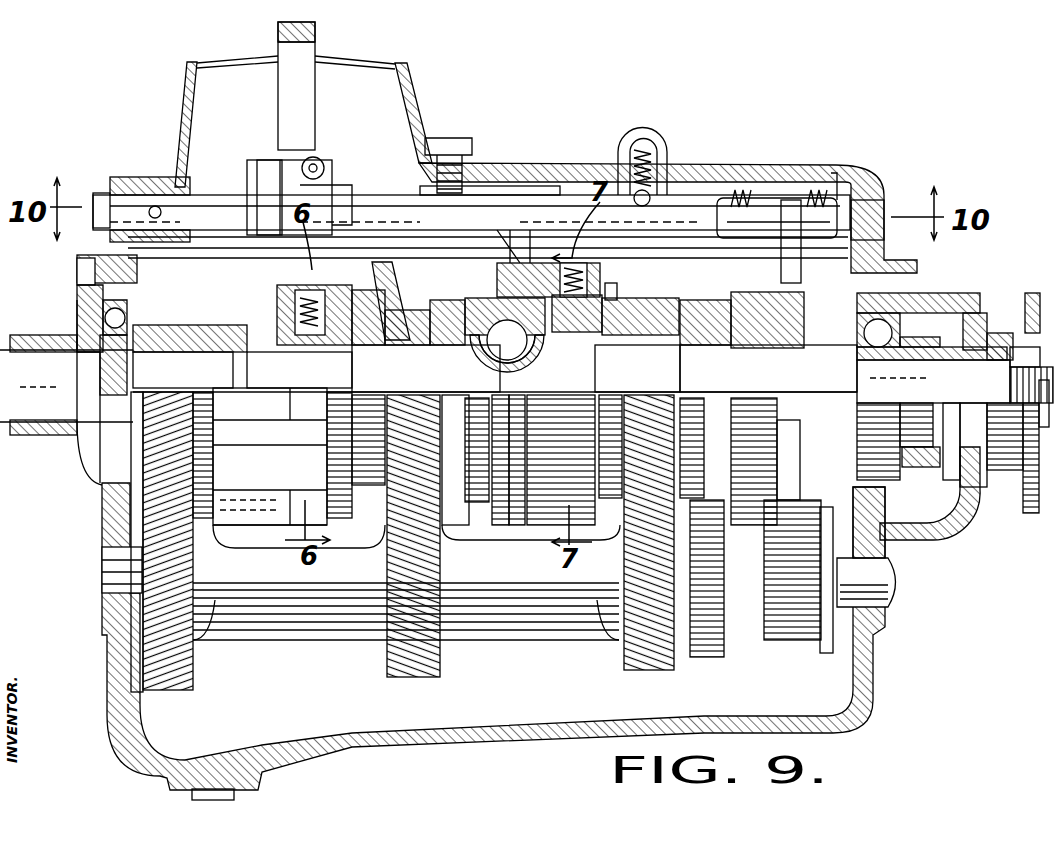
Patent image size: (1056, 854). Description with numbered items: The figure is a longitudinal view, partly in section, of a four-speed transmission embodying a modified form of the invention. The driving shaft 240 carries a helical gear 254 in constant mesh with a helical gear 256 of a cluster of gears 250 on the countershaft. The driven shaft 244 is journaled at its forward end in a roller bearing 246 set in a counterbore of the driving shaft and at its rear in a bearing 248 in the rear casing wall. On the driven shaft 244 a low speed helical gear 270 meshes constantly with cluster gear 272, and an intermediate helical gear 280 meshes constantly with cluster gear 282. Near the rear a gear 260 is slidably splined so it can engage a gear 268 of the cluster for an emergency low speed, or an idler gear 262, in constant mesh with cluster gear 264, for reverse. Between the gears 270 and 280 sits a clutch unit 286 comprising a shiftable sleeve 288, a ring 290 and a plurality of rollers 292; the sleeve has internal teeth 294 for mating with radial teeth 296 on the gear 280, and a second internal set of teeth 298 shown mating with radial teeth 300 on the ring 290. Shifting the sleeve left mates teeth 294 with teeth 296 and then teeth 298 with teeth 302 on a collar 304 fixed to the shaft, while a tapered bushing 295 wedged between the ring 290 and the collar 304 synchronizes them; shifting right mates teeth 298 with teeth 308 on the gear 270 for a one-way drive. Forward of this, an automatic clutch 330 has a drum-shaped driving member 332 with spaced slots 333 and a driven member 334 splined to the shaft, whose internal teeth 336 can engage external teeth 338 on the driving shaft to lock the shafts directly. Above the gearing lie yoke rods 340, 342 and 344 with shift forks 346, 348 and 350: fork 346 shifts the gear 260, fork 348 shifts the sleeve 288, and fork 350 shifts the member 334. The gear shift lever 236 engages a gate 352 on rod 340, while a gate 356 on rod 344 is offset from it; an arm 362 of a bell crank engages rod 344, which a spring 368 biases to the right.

The gear shift lever 236 is at (315, 52).
The driving shaft 240 is at (66, 385).
The driven shaft 244 is at (955, 403).
The roller bearing 246 is at (189, 508).
The bearing 248 is at (893, 500).
The cluster of gears 250 is at (525, 590).
The helical gear 254 is at (137, 303).
The helical gear 256 is at (170, 690).
The gear 260 is at (810, 345).
The idler gear 262 is at (790, 520).
The gear 264 is at (800, 640).
The gear 268 is at (707, 657).
The helical gear 270 is at (700, 302).
The helical gear 272 is at (648, 670).
The helical gear 280 is at (457, 290).
The helical gear 282 is at (420, 677).
The clutch unit 286 is at (540, 510).
The shiftable sleeve 288 is at (561, 460).
The ring 290 is at (605, 297).
The rollers 292 is at (637, 345).
The internal set of teeth 294 is at (490, 205).
The tapered bushing 295 is at (572, 332).
The external set of radial teeth 296 is at (500, 525).
The second internal set of teeth 298 is at (575, 277).
The external set of radial teeth 300 is at (505, 335).
The teeth 302 is at (500, 292).
The collar 304 is at (507, 365).
The external set of teeth 308 is at (600, 430).
The automatic clutch 330 is at (247, 490).
The drum-shaped driving member 332 is at (270, 485).
The slots 333 is at (270, 456).
The driven member 334 is at (426, 346).
The internal set of teeth 336 is at (299, 370).
The external set of teeth 338 is at (302, 310).
The yoke rod 340 is at (100, 195).
The yoke rod 342 is at (840, 215).
The yoke rod 344 is at (215, 200).
The shift fork 346 is at (781, 272).
The shift fork 348 is at (512, 267).
The shift fork 350 is at (362, 193).
The gate 352 is at (258, 165).
The gate 356 is at (322, 160).
The arm 362 is at (447, 181).
The spring 368 is at (740, 197).